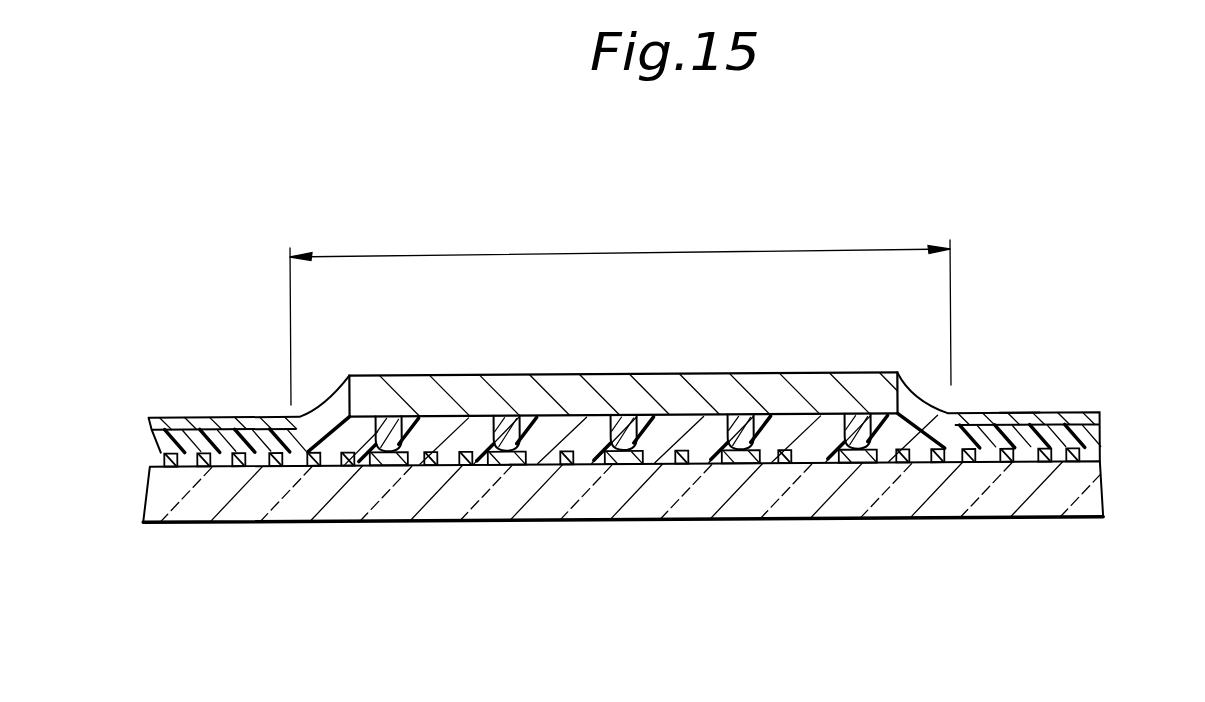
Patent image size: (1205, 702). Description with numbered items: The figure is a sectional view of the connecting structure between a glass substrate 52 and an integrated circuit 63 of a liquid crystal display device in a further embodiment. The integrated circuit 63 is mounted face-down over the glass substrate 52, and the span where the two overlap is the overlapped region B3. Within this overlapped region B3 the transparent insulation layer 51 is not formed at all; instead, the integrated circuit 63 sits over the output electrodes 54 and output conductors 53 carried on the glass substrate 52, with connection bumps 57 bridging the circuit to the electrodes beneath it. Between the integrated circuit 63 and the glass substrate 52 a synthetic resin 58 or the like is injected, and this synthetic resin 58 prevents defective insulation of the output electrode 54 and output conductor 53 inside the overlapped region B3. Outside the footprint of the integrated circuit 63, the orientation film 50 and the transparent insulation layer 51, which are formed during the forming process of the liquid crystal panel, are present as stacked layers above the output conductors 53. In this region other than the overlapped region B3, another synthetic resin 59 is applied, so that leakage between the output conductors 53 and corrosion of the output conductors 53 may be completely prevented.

The overlapped region B3 is at (642, 250).
The orientation film 50 is at (1068, 413).
The transparent insulation layer 51 is at (1098, 437).
The glass substrate 52 is at (1087, 498).
The output conductor 53 is at (680, 463).
The output electrode 54 is at (752, 463).
The bump electrode 57 is at (866, 441).
The synthetic resin 58 is at (945, 412).
The synthetic resin 59 is at (1018, 413).
The integrated circuit 63 is at (823, 393).